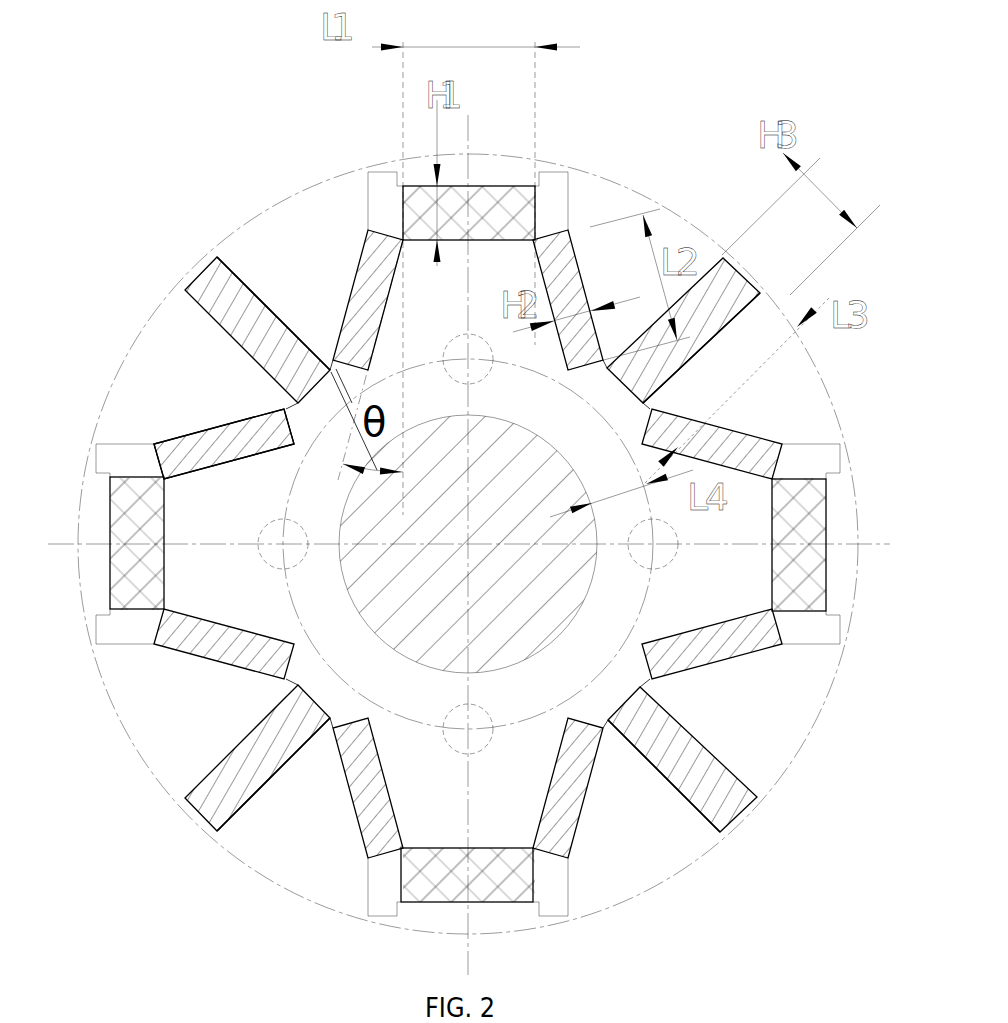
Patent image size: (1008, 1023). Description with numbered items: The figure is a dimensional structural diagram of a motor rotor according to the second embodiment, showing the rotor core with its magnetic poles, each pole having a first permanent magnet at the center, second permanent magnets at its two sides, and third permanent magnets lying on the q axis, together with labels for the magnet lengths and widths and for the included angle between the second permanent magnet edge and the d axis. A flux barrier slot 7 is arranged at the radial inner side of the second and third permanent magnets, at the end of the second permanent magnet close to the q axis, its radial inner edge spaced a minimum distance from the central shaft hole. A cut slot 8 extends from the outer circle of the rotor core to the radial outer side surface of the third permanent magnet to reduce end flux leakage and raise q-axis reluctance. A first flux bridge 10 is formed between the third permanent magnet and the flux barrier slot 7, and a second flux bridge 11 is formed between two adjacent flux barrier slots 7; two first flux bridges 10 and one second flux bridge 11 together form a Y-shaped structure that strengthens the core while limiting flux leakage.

The flux barrier slot 7 is at (307, 422).
The cut slot 8 is at (192, 812).
The first flux bridge 10 is at (211, 365).
The second flux bridge 11 is at (290, 330).